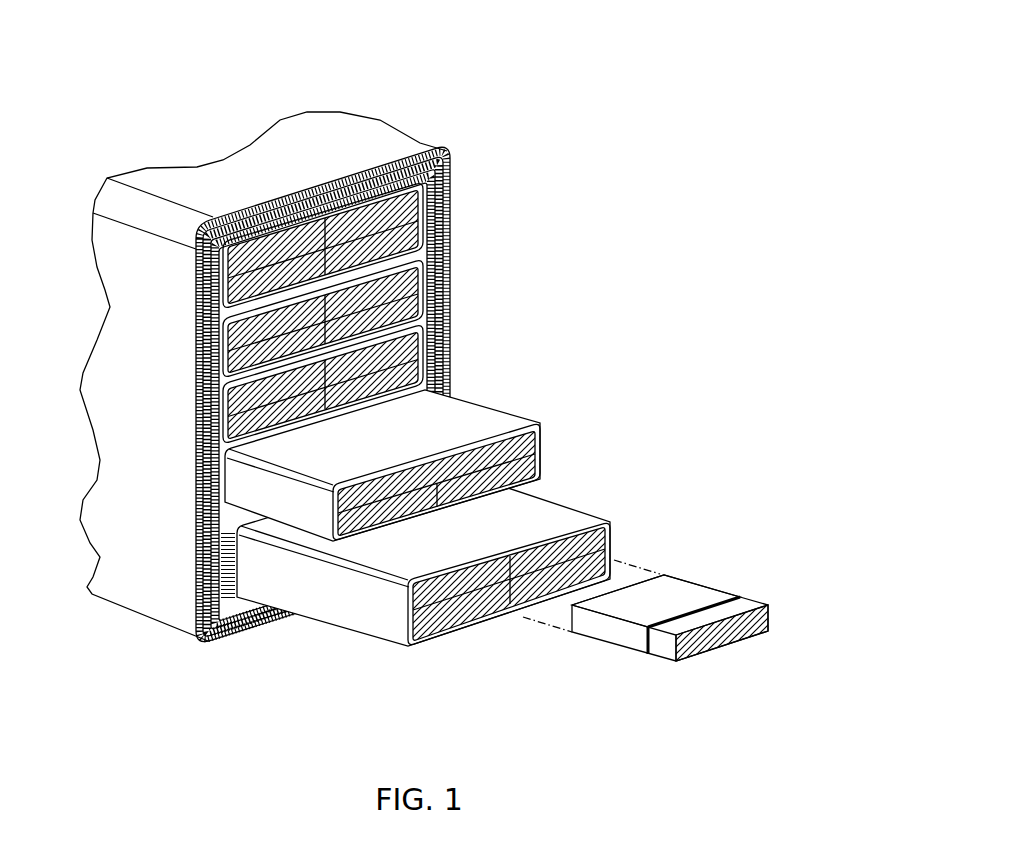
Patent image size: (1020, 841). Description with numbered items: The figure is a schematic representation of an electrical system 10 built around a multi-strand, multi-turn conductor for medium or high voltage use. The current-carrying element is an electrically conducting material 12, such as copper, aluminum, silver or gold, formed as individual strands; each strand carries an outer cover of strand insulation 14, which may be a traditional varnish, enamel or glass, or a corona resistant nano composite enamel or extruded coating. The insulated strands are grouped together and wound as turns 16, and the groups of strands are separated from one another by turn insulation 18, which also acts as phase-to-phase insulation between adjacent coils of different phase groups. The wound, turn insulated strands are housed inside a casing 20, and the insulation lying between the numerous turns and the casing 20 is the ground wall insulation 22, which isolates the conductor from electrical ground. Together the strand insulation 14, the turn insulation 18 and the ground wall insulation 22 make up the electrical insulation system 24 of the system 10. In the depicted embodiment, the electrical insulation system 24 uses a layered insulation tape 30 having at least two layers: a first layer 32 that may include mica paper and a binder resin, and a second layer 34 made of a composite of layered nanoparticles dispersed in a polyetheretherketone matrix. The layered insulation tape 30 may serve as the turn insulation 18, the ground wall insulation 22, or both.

The electrical system 10 is at (683, 62).
The electrically conducting material 12 is at (772, 614).
The strand insulation 14 is at (716, 590).
The turns 16 is at (540, 457).
The turn insulation 18 is at (483, 413).
The casing 20 is at (356, 129).
The ground wall insulation 22 is at (453, 150).
The electrical insulation system 24 is at (603, 633).
The layered insulation tape 30 is at (498, 165).
The first layer 32 is at (436, 189).
The second layer 34 is at (428, 268).